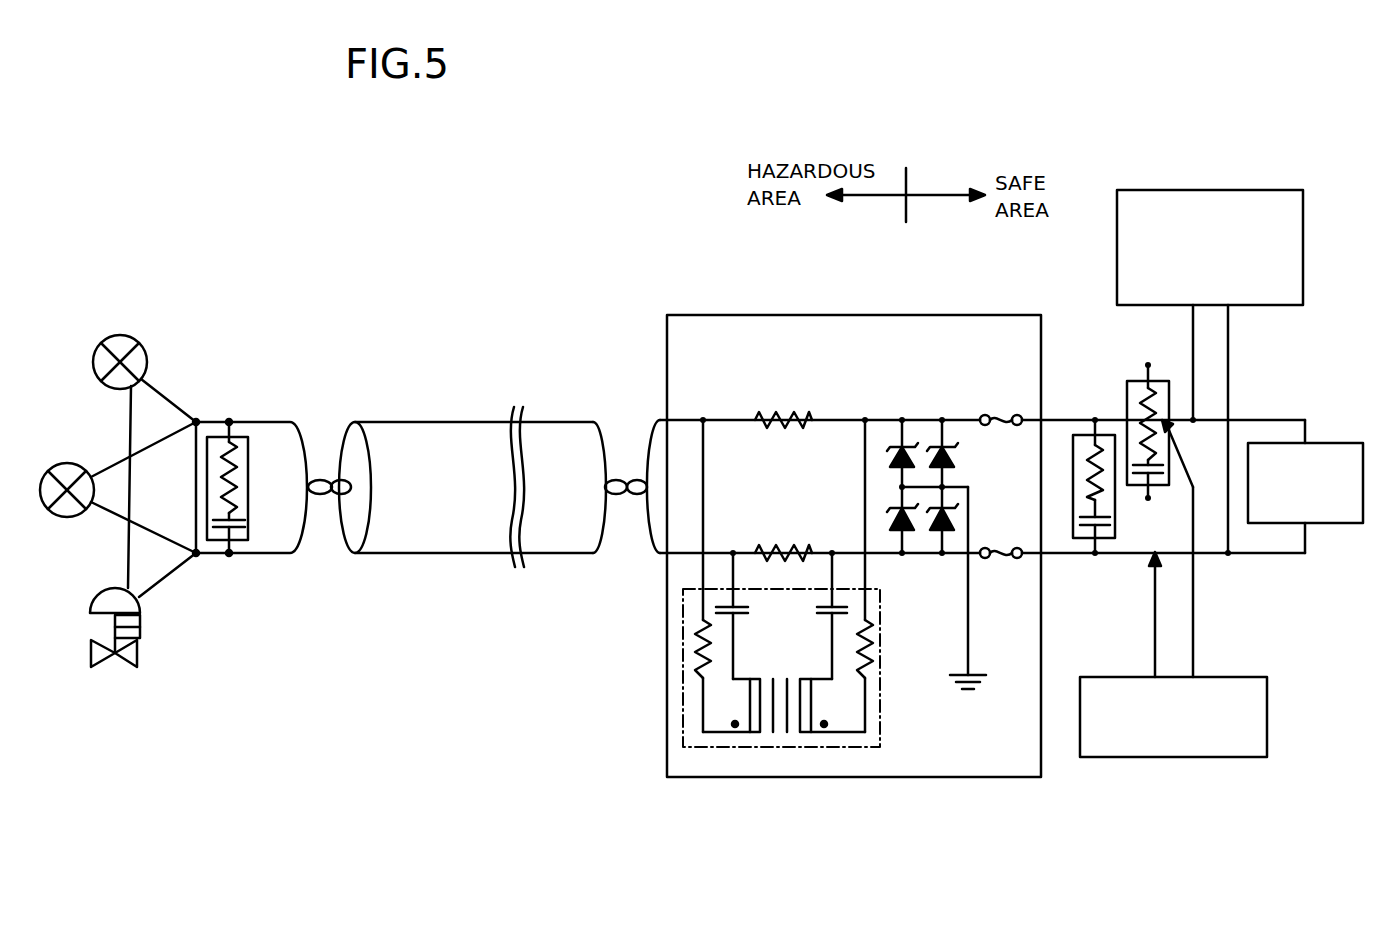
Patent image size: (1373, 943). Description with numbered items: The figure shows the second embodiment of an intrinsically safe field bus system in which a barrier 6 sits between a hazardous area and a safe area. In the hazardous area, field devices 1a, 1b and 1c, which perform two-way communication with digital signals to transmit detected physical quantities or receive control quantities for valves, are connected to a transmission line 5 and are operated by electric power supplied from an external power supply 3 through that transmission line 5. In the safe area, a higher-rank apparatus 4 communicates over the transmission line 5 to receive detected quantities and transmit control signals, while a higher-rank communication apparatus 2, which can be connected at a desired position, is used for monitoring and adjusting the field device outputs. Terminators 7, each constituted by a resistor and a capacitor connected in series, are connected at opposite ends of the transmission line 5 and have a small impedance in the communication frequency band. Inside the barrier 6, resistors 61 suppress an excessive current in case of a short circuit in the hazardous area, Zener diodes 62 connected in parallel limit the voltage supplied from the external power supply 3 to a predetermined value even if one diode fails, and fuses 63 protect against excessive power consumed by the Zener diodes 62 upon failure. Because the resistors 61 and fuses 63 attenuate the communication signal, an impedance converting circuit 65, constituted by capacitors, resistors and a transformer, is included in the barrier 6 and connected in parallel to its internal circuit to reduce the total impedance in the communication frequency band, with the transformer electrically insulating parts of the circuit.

The field device 1a is at (120, 335).
The field device 1b is at (67, 463).
The field device 1c is at (141, 611).
The higher-rank communication apparatus 2 is at (1267, 720).
The external power supply 3 is at (1348, 525).
The higher-rank apparatus 4 is at (1303, 265).
The transmission line 5 is at (453, 420).
The barrier 6 is at (667, 762).
The terminator 7 is at (248, 488).
The resistor 61 is at (780, 412).
The Zener diode 62 is at (958, 477).
The fuse 63 is at (1000, 413).
The impedance converting circuit 65 is at (880, 735).